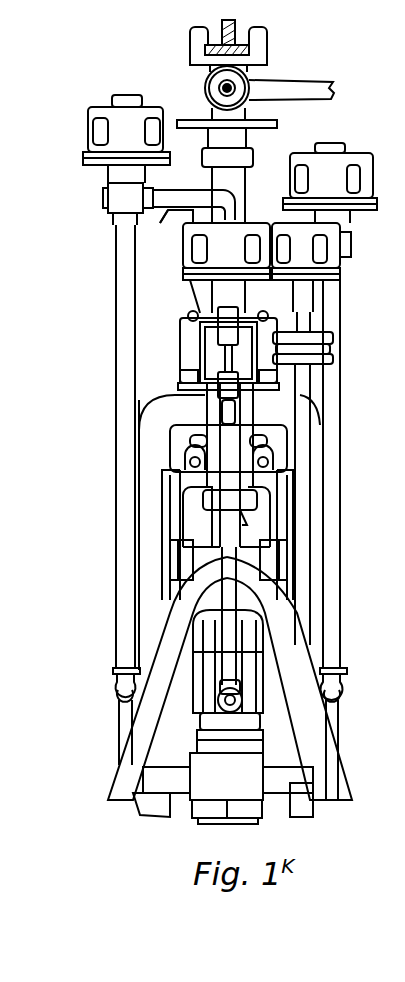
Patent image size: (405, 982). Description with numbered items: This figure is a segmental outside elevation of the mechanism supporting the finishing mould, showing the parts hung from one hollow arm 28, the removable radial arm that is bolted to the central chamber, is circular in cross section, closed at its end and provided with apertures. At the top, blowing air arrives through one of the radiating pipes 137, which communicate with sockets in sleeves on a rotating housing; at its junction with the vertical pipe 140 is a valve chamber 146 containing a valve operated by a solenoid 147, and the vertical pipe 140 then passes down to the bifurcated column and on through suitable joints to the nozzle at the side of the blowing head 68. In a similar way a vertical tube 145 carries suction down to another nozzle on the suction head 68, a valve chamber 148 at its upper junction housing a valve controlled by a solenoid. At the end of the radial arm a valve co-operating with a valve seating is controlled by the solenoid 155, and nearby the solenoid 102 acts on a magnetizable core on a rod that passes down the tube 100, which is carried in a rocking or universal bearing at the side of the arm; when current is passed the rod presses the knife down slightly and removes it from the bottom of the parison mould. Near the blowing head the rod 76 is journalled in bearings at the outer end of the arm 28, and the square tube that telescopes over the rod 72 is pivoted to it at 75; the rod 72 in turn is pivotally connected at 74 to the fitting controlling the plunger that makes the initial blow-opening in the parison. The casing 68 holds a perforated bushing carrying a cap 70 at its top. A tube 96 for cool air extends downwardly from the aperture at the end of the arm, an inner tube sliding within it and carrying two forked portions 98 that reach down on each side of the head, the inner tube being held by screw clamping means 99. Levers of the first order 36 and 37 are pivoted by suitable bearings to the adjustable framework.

The solenoid 147 is at (88, 122).
The valve chamber 146 is at (122, 198).
The radiating pipes 137 is at (184, 195).
The solenoid 155 is at (226, 268).
The solenoid 102 is at (307, 233).
The valve chamber 148 is at (351, 247).
The vertical tubes 145 is at (333, 323).
The vertical pipes 140 is at (127, 431).
The hollow arm 28 is at (190, 355).
The rod 76 is at (227, 355).
The tube for cool air 96 is at (242, 435).
The pivot 75 is at (230, 465).
The screw clamping means 99 is at (250, 503).
The tube 100 is at (300, 538).
The lever of the first order 36 is at (217, 513).
The rod 72 is at (227, 638).
The forked portions 98 is at (290, 653).
The lever of the first order 37 is at (218, 635).
The pivot 74 is at (242, 697).
The cap 70 is at (210, 742).
The chamber 68 is at (203, 787).